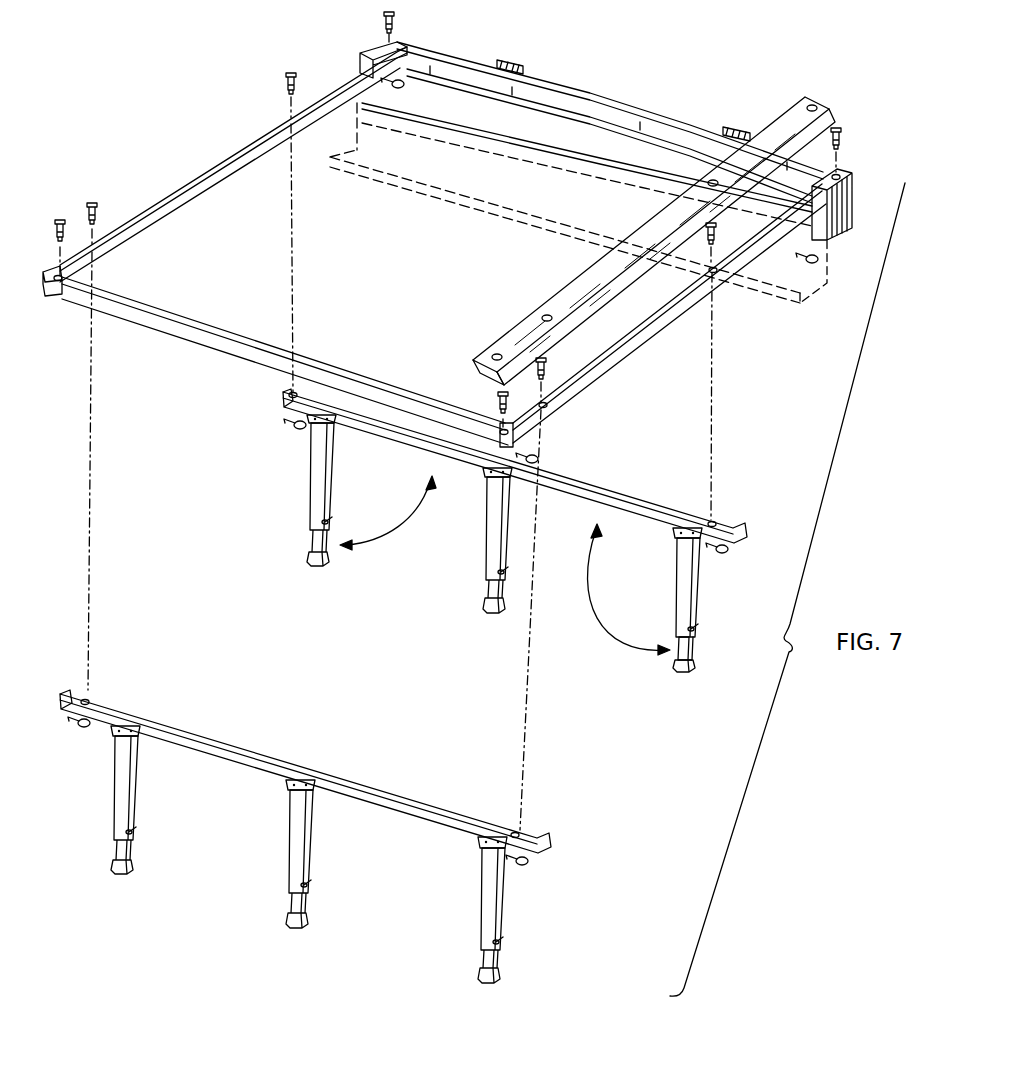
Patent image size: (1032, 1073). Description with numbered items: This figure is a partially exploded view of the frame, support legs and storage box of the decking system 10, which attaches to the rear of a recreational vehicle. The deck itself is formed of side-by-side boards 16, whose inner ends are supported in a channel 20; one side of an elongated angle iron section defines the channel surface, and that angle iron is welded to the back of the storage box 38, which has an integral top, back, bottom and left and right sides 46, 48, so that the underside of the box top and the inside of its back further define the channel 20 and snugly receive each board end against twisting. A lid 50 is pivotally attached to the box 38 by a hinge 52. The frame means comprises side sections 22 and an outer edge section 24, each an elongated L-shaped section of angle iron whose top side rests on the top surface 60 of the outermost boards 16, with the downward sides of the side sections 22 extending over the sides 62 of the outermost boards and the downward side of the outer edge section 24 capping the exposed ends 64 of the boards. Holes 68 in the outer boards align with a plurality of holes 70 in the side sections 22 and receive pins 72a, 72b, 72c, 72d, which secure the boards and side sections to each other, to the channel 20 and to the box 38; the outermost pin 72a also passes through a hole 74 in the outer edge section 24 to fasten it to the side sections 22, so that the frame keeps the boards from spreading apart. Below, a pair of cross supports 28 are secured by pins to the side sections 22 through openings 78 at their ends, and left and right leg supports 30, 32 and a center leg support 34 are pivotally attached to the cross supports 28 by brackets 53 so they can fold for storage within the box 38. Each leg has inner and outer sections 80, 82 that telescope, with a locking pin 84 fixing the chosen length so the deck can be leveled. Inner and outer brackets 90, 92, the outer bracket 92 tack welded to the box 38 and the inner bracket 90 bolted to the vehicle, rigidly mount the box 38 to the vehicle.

The decking system 10 is at (262, 98).
The boards 16 is at (648, 242).
The channel 20 is at (585, 116).
The side sections 22 is at (196, 177).
The outer edge section 24 is at (188, 330).
The cross supports 28 is at (620, 494).
The left leg support 30 is at (312, 469).
The right leg support 32 is at (614, 760).
The center leg support 34 is at (486, 537).
The storage box 38 is at (443, 48).
The left side of box 46 is at (360, 70).
The right side of box 48 is at (852, 205).
The lid 50 is at (828, 283).
The hinge 52 is at (531, 152).
The brackets 53 is at (333, 423).
The top surface of outermost boards 60 is at (787, 118).
The sides of outermost boards 62 is at (832, 114).
The exposed ends of boards 64 is at (474, 364).
The holes in outer boards 68 is at (497, 352).
The holes in side section 70 is at (706, 273).
The pin 72a is at (60, 218).
The pin 72b is at (94, 203).
The pin 72c is at (288, 120).
The pin 72d is at (381, 22).
The hole in outer edge section 74 is at (60, 290).
The support bar hole 78 is at (288, 393).
The inner section of support leg 80 is at (695, 652).
The outer section of support leg 82 is at (700, 605).
The locking pin 84 is at (331, 526).
The inner bracket 90 is at (520, 64).
The outer bracket 92 is at (505, 63).